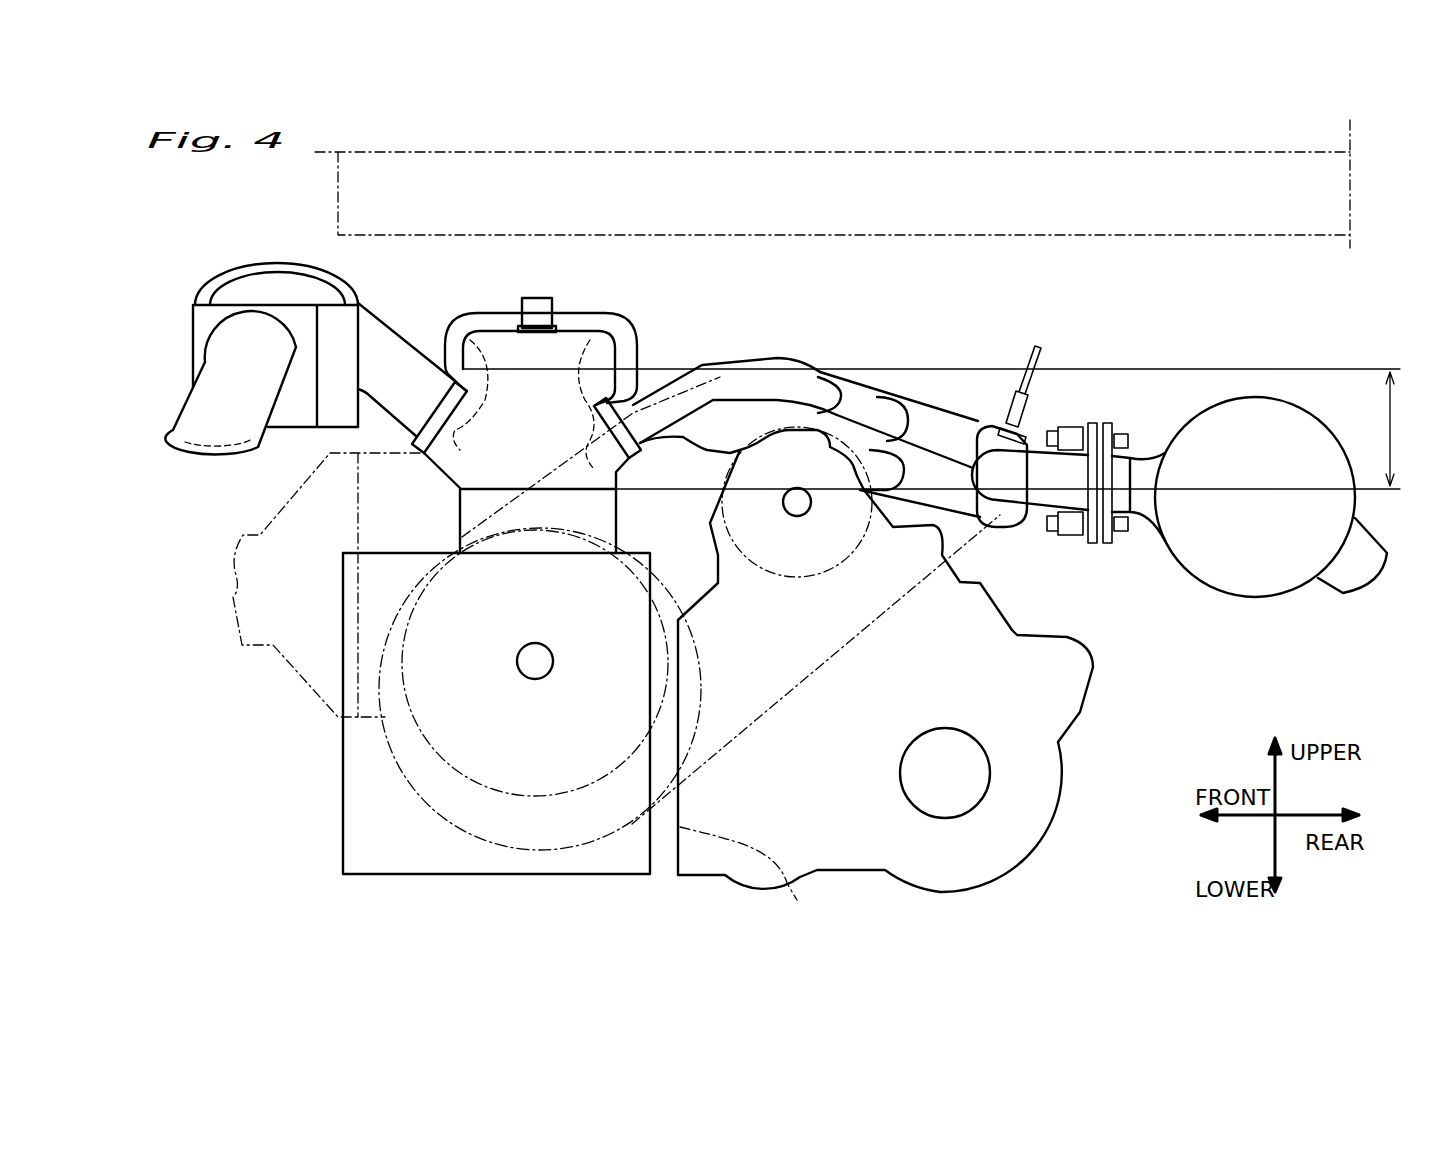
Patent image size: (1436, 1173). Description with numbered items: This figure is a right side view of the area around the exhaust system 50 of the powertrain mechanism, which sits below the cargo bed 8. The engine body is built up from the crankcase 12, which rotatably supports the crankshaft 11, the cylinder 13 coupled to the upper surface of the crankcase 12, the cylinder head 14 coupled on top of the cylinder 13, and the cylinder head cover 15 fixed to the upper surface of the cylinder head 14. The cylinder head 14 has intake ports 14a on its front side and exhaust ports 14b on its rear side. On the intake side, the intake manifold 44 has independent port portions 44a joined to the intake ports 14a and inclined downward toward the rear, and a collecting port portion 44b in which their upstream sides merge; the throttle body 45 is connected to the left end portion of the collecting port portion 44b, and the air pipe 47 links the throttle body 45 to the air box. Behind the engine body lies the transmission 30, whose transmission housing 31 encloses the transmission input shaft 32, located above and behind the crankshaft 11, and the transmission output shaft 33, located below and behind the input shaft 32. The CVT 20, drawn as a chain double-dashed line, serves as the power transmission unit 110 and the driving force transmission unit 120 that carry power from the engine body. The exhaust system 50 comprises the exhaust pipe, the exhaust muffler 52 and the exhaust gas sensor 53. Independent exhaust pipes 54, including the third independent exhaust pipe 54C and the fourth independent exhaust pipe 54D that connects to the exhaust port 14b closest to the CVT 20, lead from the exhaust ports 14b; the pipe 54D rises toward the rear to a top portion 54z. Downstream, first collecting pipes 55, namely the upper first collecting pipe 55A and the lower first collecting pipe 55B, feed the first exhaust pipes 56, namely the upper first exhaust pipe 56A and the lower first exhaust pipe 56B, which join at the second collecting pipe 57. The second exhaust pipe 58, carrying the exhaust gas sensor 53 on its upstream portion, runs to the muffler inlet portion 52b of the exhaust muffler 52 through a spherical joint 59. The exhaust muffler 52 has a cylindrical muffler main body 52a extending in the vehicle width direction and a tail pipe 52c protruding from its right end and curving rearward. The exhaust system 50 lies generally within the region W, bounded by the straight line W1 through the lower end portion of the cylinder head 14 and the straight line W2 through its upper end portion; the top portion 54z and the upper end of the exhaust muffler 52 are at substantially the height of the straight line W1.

The cargo bed 8 is at (985, 235).
The crankshaft 11 is at (545, 668).
The crankcase 12 is at (400, 847).
The cylinder 13 is at (460, 505).
The cylinder head 14 is at (527, 373).
The intake port 14a is at (490, 410).
The exhaust port 14b is at (590, 375).
The cylinder head cover 15 is at (565, 330).
The CVT 20 is at (862, 685).
The power transmission unit 110 is at (862, 685).
The driving force transmission unit 120 is at (760, 860).
The transmission 30 is at (921, 683).
The transmission housing 31 is at (1085, 725).
The transmission input shaft 32 is at (790, 505).
The transmission output shaft 33 is at (960, 787).
The intake manifold 44 is at (310, 331).
The independent port portion 44a is at (388, 345).
The collecting port portion 44b is at (262, 285).
The throttle body 45 is at (302, 405).
The air pipe 47 is at (258, 392).
The exhaust system 50 is at (1010, 486).
The exhaust muffler 52 is at (1257, 551).
The muffler main body 52a is at (1278, 534).
The muffler inlet portion 52b is at (1137, 522).
The tail pipe 52c is at (1330, 585).
The exhaust gas sensor 53 is at (1022, 410).
The independent exhaust pipe 54 is at (746, 360).
The third independent exhaust pipe 54C is at (760, 430).
The fourth independent exhaust pipe 54D is at (700, 360).
The top portion 54z is at (760, 380).
The first collecting pipe 55 is at (926, 389).
The upper first collecting pipe 55A is at (893, 395).
The lower first collecting pipe 55B is at (870, 450).
The first exhaust pipe 56 is at (963, 395).
The upper first exhaust pipe 56A is at (990, 430).
The lower first exhaust pipe 56B is at (960, 490).
The second collecting pipe 57 is at (1000, 520).
The second exhaust pipe 58 is at (1040, 500).
The spherical joint 59 is at (1098, 567).
The region W is at (1400, 429).
The straight line W1 is at (1372, 492).
The straight line W2 is at (1372, 368).